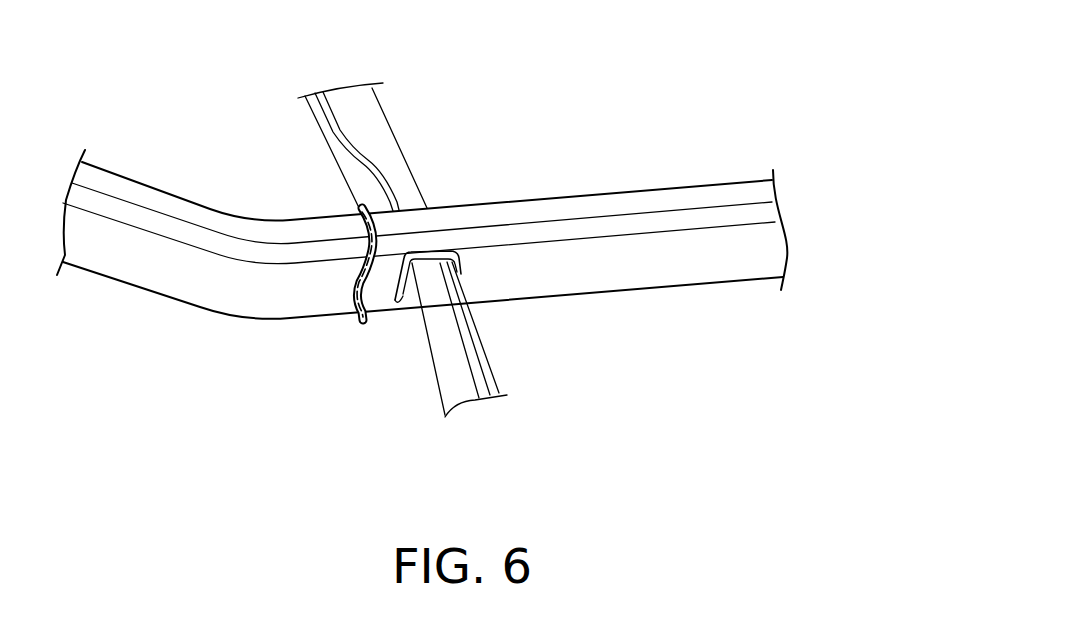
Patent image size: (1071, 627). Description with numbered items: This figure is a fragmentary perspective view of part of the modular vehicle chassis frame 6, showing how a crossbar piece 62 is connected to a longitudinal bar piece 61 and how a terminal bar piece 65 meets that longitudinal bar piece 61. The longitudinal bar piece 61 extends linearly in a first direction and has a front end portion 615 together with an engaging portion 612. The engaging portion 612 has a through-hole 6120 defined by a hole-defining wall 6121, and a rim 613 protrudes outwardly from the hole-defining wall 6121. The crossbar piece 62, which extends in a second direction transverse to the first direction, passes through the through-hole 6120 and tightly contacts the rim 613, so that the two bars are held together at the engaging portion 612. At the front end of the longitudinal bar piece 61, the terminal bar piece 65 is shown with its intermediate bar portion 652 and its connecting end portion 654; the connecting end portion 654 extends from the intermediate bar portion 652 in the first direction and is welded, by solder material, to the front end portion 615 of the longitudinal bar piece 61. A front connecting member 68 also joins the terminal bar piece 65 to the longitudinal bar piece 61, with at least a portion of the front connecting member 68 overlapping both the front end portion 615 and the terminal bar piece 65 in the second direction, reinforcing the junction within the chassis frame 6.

The modular vehicle chassis frame 6 is at (221, 106).
The longitudinal bar piece 61 is at (612, 168).
The engaging portion 612 is at (484, 223).
The rim 613 is at (432, 252).
The front end portion 615 is at (397, 222).
The crossbar piece 62 is at (490, 362).
The through-hole 6120 is at (413, 283).
The hole-defining wall 6121 is at (395, 362).
The terminal bar piece 65 is at (184, 347).
The intermediate bar portion 652 is at (122, 255).
The connecting end portion 654 is at (288, 310).
The front connecting member 68 is at (354, 227).